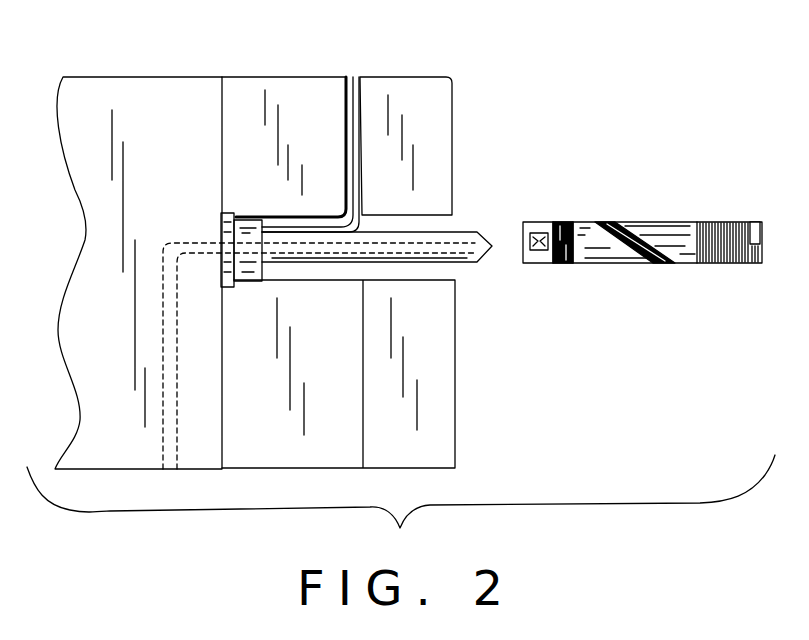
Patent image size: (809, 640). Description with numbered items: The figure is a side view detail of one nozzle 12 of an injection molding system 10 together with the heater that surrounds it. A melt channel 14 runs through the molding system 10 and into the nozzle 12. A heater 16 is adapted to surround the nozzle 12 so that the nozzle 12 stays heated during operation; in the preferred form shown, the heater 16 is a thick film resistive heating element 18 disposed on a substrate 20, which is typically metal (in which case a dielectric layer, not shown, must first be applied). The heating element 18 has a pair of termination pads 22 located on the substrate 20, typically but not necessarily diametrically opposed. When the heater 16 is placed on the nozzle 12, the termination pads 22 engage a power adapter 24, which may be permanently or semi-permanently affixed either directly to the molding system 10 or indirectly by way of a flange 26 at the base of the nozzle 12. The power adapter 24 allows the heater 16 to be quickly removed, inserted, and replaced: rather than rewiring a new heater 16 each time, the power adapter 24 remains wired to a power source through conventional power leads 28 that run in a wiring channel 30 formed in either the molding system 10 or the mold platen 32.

The molding system 10 is at (152, 96).
The nozzle 12 is at (407, 228).
The melt channel 14 is at (163, 402).
The heater 16 is at (630, 243).
The thick film resistive heating element 18 is at (635, 250).
The substrate 20 is at (628, 221).
The termination pads 22 is at (540, 246).
The power adapter 24 is at (247, 203).
The flange 26 is at (233, 287).
The power leads 28 is at (350, 103).
The wiring channel 30 is at (363, 132).
The mold platen 32 is at (292, 90).